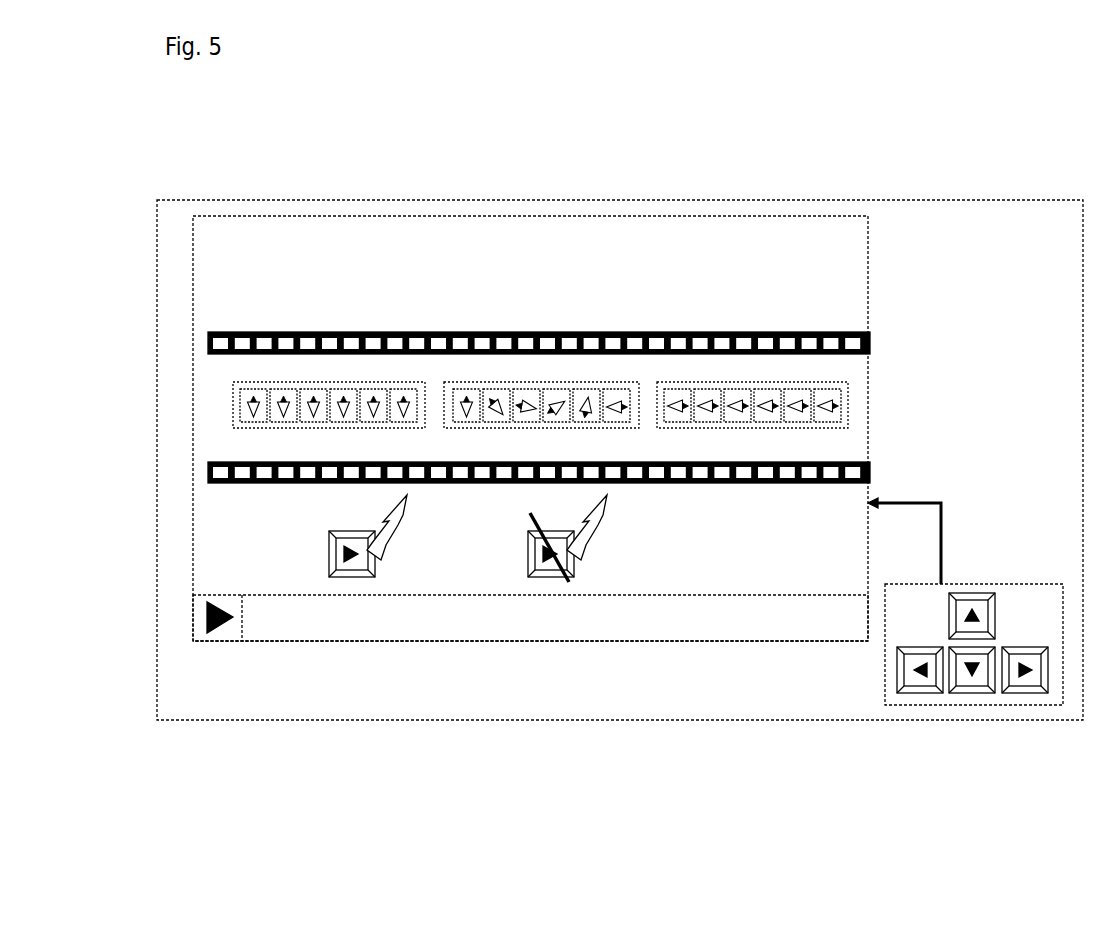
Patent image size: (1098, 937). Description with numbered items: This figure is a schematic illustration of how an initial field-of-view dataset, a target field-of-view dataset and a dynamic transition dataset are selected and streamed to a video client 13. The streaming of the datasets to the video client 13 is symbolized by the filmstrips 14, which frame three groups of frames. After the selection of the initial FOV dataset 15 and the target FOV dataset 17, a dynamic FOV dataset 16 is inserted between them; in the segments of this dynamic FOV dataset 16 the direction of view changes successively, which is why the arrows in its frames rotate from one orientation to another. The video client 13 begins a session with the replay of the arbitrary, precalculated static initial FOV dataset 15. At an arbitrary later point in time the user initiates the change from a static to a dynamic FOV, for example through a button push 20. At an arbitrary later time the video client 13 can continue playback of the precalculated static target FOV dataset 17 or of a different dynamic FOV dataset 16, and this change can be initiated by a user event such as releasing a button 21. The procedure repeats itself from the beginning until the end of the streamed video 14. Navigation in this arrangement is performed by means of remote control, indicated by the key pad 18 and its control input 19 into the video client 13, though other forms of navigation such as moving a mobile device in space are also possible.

The video client 13 is at (323, 642).
The filmstrips 14 is at (322, 372).
The initial FOV dataset 15 is at (330, 428).
The dynamic FOV dataset 16 is at (565, 428).
The target FOV dataset 17 is at (760, 428).
The navigation key pad 18 is at (1034, 583).
The control arrow / input connection 19 is at (943, 508).
The button push 20 is at (329, 560).
The releasing a button 21 is at (528, 560).